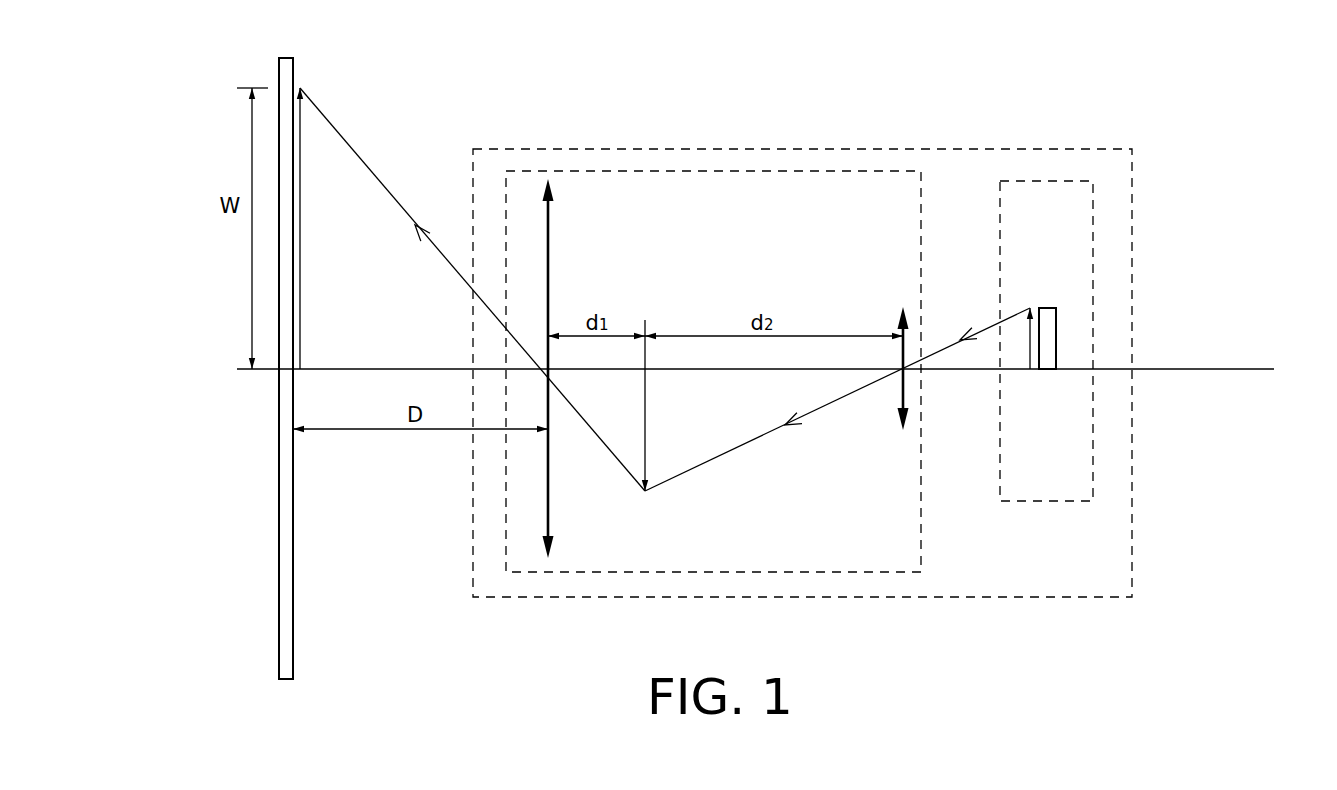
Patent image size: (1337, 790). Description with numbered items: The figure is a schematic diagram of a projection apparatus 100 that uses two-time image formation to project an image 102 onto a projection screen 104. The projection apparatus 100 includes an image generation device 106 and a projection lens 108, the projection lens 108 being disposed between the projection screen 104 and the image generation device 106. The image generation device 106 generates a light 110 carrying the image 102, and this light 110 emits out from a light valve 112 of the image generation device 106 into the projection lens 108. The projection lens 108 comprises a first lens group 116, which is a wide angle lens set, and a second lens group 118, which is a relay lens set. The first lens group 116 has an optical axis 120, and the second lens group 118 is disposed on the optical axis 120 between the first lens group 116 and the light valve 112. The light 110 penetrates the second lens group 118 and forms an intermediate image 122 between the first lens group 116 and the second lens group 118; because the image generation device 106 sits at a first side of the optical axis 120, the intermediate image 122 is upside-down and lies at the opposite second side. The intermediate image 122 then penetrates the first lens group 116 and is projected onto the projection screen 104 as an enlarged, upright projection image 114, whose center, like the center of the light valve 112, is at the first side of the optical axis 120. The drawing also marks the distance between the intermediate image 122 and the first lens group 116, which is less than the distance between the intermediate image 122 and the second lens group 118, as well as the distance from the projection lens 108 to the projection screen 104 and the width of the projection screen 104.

The projection apparatus 100 is at (965, 149).
The image 102 is at (1031, 347).
The projection screen 104 is at (278, 594).
The image generation device 106 is at (1073, 181).
The projection lens 108 is at (738, 171).
The light 110 is at (817, 410).
The light valve 112 is at (1047, 308).
The projection image 114 is at (302, 138).
The first lens group 116 is at (549, 217).
The second lens group 118 is at (899, 325).
The optical axis 120 is at (1226, 369).
The intermediate image 122 is at (646, 438).